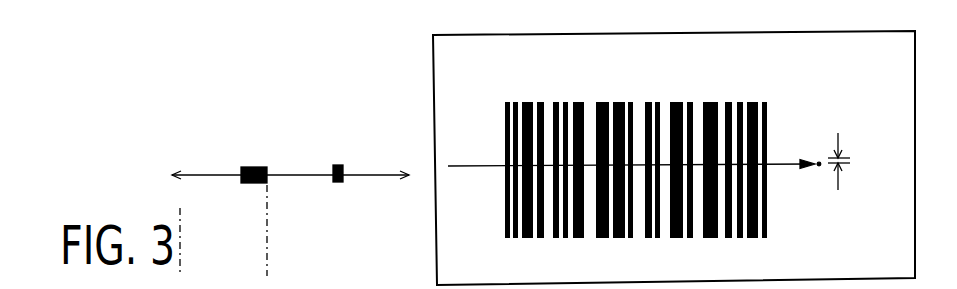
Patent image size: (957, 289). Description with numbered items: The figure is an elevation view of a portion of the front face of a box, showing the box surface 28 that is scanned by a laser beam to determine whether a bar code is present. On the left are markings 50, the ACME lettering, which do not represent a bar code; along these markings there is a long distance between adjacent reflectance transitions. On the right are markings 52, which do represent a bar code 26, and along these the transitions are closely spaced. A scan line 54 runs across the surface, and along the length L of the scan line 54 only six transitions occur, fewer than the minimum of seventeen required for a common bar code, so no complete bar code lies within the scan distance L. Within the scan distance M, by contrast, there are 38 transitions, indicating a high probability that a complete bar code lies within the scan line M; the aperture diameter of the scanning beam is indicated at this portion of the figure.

The markings 50 is at (137, 147).
The box surface 28 is at (245, 118).
The scan line 54 is at (313, 173).
The bar code 26 is at (507, 213).
The markings representing a bar code 52 is at (475, 92).
The number of transitions 38 is at (848, 267).
The scan distance L is at (293, 175).
The scan distance M is at (782, 160).